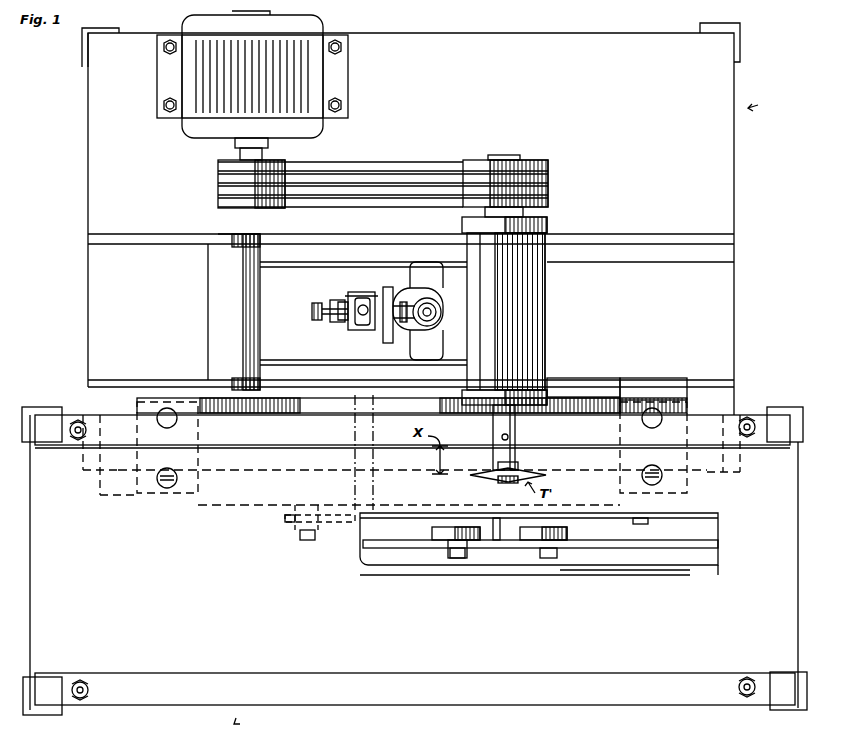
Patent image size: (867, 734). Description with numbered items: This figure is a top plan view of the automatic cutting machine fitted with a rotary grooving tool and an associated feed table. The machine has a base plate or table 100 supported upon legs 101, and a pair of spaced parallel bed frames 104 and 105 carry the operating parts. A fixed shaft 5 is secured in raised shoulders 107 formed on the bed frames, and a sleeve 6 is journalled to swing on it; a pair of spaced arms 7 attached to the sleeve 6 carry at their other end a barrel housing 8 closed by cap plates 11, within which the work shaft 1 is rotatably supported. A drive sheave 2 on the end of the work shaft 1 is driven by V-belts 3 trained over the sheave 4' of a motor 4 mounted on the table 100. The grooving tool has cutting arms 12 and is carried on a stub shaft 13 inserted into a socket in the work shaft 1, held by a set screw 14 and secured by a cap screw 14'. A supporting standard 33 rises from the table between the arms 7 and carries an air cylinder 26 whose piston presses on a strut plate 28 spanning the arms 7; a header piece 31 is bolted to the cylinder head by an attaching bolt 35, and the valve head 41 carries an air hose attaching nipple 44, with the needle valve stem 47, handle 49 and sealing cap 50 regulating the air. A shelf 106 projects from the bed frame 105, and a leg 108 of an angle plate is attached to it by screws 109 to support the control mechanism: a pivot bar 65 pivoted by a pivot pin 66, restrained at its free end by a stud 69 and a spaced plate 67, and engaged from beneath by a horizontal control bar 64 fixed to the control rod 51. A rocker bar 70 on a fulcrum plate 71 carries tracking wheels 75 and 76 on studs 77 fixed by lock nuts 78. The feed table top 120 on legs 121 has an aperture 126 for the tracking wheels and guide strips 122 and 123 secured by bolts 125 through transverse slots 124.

The work shaft 1 is at (505, 157).
The drive pulley or sheave 2 is at (540, 160).
The V-belts 3 is at (430, 165).
The motor 4 is at (252, 85).
The motor pulley 4' is at (233, 179).
The fixed shaft 5 is at (232, 236).
The sleeve 6 is at (208, 303).
The spaced arms 7 is at (268, 263).
The barrel housing 8 is at (520, 330).
The cap plate 11 is at (547, 222).
The cutting arms 12 is at (480, 478).
The stub shaft 13 is at (518, 468).
The set screw 14 is at (527, 432).
The cap screw 14' is at (496, 490).
The air cylinder 26 is at (440, 300).
The strut plate 28 is at (426, 275).
The header piece 31 is at (440, 318).
The supporting standard 33 is at (388, 287).
The attaching bolt 35 is at (436, 312).
The valve head 41 is at (350, 300).
The air hose attaching nipple 44 is at (443, 345).
The valve stem 47 is at (338, 306).
The handle 49 is at (315, 308).
The sealing cap 50 is at (340, 318).
The control rod 51 is at (360, 325).
The horizontal control bar 64 is at (355, 432).
The pivot bar 65 is at (285, 518).
The pivot pin 66 is at (640, 524).
The spaced plate 67 is at (300, 530).
The stud 69 is at (310, 540).
The rocker bar 70 is at (640, 575).
The fulcrum plate 71 is at (497, 530).
The tracking wheel 75 is at (550, 532).
The tracking wheel 76 is at (445, 532).
The stud 77 is at (455, 555).
The lock nut 78 is at (470, 555).
The base plate or table 100 is at (734, 190).
The legs 101 is at (85, 55).
The bed frame 104 is at (660, 234).
The bed frame 105 is at (600, 380).
The shelf 106 is at (730, 415).
The raised shoulders 107 is at (232, 240).
The leg 108 is at (645, 400).
The bolts or screws 109 is at (660, 410).
The table top 120 is at (414, 562).
The legs 121 is at (38, 407).
The guide strip 122 is at (210, 675).
The guide strip 123 is at (45, 445).
The transverse slots 124 is at (747, 420).
The bolts 125 is at (78, 423).
The aperture 126 is at (395, 560).